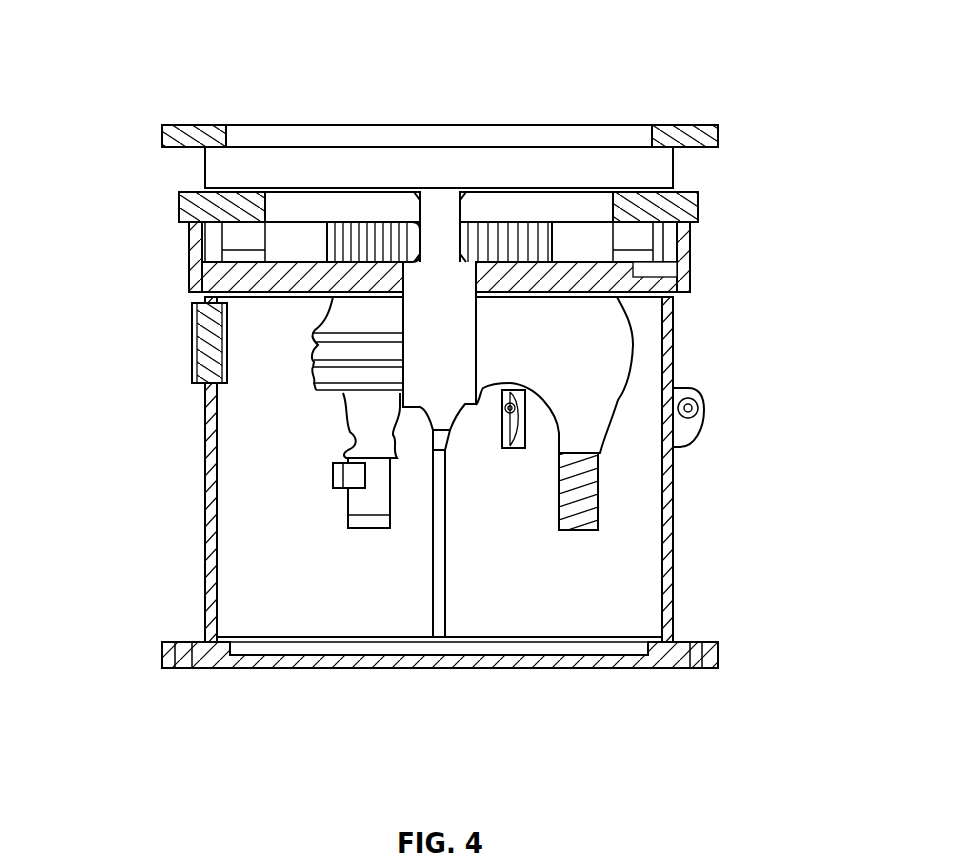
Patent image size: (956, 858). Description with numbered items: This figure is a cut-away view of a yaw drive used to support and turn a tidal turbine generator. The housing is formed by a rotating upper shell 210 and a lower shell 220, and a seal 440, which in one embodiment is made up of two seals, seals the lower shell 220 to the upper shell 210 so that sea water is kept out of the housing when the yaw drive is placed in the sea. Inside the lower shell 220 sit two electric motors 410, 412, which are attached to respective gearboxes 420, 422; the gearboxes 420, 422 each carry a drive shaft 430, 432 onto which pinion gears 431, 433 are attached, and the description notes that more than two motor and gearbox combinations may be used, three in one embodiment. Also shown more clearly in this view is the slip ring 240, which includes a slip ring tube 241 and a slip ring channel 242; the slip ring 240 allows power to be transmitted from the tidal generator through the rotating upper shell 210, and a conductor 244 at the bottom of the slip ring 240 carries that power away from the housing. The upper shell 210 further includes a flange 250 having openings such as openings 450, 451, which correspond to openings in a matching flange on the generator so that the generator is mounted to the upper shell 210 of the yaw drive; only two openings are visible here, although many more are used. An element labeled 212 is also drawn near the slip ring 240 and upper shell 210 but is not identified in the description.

The upper shell 210 is at (205, 167).
The brush element 212 is at (350, 240).
The lower shell 220 is at (205, 615).
The slip ring 240 is at (420, 387).
The slip ring tube 241 is at (470, 175).
The slip ring channel 242 is at (587, 130).
The conductor 244 is at (466, 617).
The flange 250 is at (720, 135).
The electric motor 410 is at (352, 518).
The electric motor 412 is at (587, 503).
The gearbox 420 is at (340, 395).
The gearbox 422 is at (600, 427).
The drive shaft 430 is at (205, 297).
The pinion gear 431 is at (285, 240).
The drive shaft 432 is at (533, 243).
The pinion gear 433 is at (445, 242).
The seal 440 is at (208, 272).
The opening 450 is at (687, 135).
The opening 451 is at (188, 128).